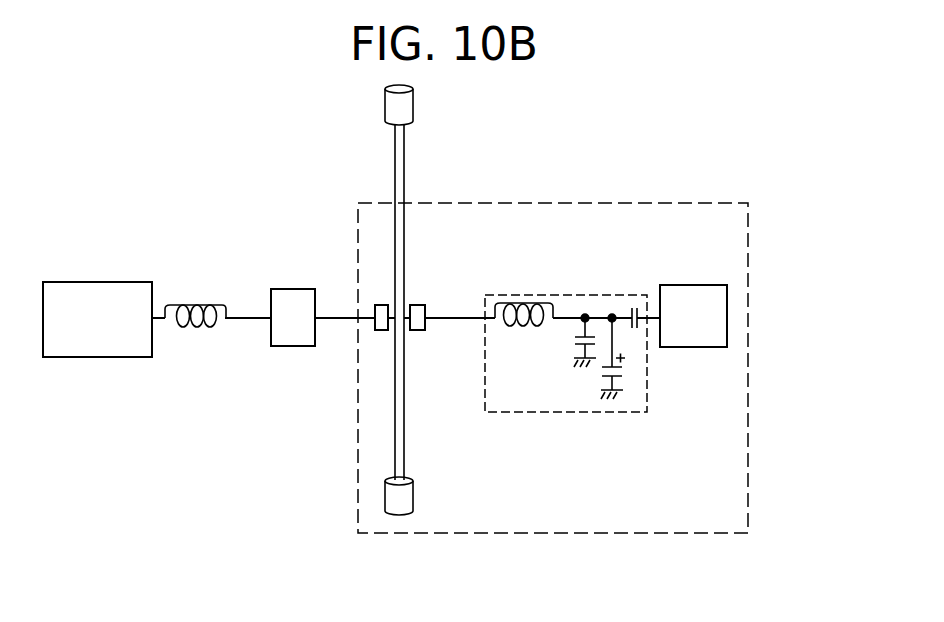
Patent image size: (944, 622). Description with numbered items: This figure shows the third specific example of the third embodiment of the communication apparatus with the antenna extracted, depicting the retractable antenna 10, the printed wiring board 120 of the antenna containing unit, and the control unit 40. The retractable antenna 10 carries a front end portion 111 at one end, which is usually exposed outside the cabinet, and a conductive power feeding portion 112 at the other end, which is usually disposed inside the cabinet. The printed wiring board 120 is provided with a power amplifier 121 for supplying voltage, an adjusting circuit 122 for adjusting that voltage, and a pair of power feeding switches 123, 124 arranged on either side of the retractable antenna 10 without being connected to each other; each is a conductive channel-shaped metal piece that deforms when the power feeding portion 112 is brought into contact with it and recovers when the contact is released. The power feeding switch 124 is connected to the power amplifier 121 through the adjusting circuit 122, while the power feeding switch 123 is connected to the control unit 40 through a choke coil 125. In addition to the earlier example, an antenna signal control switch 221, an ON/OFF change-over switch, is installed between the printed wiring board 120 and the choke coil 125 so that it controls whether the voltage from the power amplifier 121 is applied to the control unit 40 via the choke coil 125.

The retractable antenna 10 is at (394, 150).
The front end portion 111 is at (385, 102).
The power feeding portion 112 is at (413, 505).
The control unit 40 is at (128, 357).
The choke coil 125 is at (195, 302).
The antenna signal control switch 221 is at (293, 289).
The printed wiring board 120 is at (739, 233).
The power feeding switch 123 is at (381, 330).
The power feeding switch 124 is at (418, 330).
The adjusting circuit 122 is at (626, 412).
The power amplifier 121 is at (713, 347).